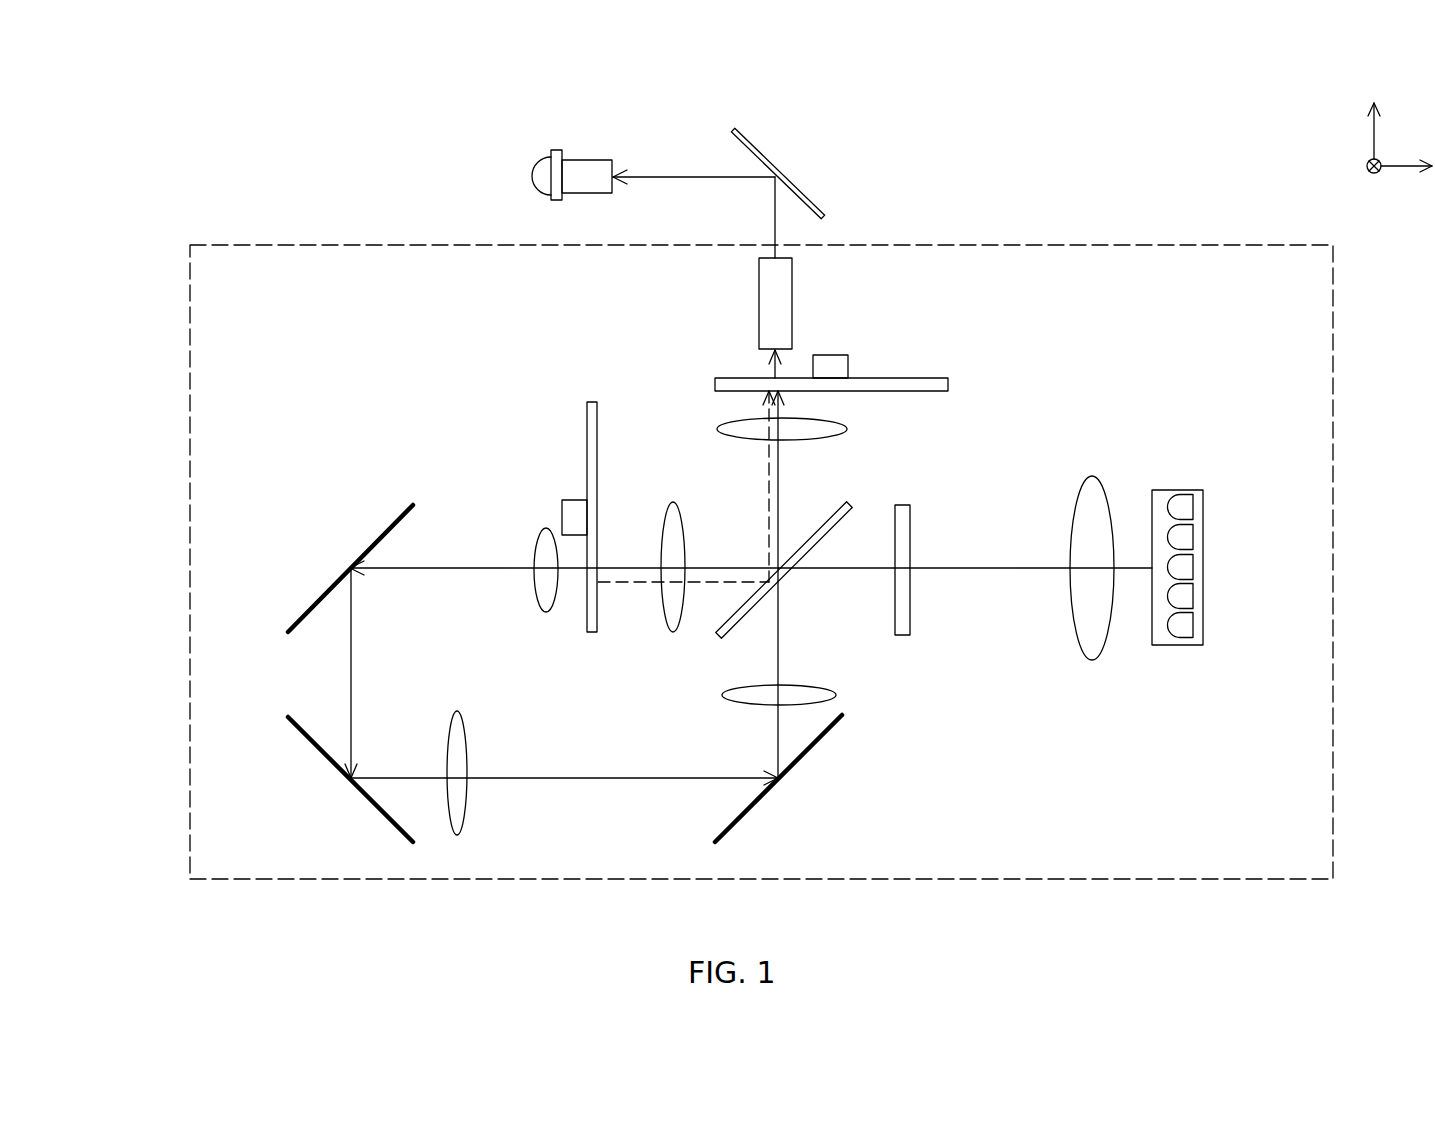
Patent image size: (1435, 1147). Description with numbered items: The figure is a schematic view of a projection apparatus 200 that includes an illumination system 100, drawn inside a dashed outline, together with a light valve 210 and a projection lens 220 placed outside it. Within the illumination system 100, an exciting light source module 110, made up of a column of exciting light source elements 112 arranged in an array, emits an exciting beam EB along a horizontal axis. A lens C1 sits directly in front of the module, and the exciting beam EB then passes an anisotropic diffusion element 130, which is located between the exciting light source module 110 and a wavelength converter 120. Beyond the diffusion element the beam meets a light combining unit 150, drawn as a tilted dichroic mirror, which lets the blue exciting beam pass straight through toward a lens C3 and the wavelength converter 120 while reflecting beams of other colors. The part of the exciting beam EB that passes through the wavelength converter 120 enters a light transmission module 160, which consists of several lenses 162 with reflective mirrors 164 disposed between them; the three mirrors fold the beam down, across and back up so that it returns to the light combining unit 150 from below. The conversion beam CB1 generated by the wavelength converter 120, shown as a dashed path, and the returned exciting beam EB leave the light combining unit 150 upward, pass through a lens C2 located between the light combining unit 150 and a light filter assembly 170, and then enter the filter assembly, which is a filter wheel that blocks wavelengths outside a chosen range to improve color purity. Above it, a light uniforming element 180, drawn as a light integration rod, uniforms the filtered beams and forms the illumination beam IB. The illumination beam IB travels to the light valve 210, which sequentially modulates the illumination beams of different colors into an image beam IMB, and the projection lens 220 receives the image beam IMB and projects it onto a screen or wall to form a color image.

The illumination system 100 is at (1335, 357).
The exciting light source module 110 is at (1232, 567).
The exciting light source elements 112 is at (1185, 507).
The wavelength converter 120 is at (590, 634).
The anisotropic diffusion element 130 is at (902, 637).
The light combining unit 150 is at (855, 500).
The light transmission module 160 is at (140, 83).
The lenses 162 is at (540, 612).
The reflective mirrors 164 is at (290, 626).
The light filter assembly 170 is at (952, 388).
The light uniforming element 180 is at (780, 297).
The projection apparatus 200 is at (1422, 939).
The light valve 210 is at (833, 217).
The projection lens 220 is at (537, 175).
The lens C1 is at (1097, 652).
The lens C2 is at (842, 432).
The lens C3 is at (670, 634).
The exciting beam EB is at (988, 567).
The conversion beam CB1 is at (766, 497).
The illumination beam IB is at (773, 227).
The image beam IMB is at (678, 176).